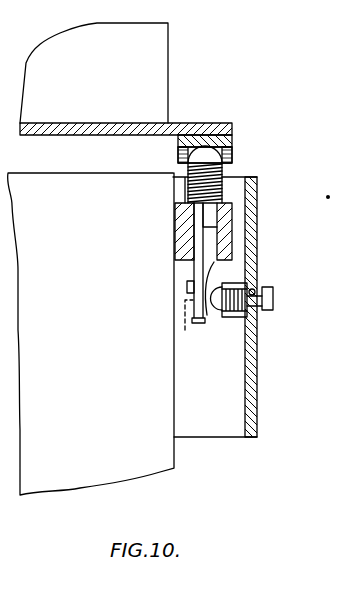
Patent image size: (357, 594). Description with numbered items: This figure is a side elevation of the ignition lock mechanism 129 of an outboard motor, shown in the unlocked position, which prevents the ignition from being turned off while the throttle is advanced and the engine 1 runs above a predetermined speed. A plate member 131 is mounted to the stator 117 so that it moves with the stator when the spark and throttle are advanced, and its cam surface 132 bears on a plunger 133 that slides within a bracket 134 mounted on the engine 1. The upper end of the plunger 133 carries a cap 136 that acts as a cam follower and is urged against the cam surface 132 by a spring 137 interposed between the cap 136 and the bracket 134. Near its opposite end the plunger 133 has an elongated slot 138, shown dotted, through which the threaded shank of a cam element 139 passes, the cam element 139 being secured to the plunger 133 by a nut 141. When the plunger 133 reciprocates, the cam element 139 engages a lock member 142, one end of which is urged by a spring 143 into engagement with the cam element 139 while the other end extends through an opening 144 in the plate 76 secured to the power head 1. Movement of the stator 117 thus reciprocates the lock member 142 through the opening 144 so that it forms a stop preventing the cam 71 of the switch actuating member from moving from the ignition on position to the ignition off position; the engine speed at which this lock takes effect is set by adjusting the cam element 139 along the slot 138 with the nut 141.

The power head 1 is at (160, 450).
The cam 71 is at (273, 298).
The plate 76 is at (252, 384).
The stator 117 is at (172, 130).
The ignition lock mechanism 129 is at (302, 204).
The plate member 131 is at (234, 139).
The cam surface 132 is at (232, 156).
The plunger 133 is at (202, 212).
The bracket 134 is at (183, 242).
The cap 136 is at (190, 157).
The spring 137 is at (221, 176).
The elongated slot 138 is at (191, 275).
The cam element 139 is at (209, 267).
The nut 141 is at (188, 288).
The lock member 142 is at (250, 304).
The spring 143 is at (232, 313).
The opening 144 is at (254, 289).